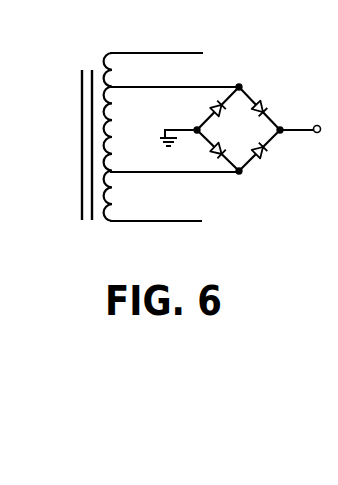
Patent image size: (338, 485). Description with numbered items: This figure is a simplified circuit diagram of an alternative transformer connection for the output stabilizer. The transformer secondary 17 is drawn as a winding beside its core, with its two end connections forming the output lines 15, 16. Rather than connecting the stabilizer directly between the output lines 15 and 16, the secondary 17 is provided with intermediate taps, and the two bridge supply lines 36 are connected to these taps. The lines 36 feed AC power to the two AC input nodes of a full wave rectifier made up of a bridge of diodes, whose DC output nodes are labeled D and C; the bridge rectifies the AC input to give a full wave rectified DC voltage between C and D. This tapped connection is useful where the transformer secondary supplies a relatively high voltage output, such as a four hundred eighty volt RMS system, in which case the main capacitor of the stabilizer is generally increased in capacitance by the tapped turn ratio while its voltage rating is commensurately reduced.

The output line 15 is at (170, 53).
The output line 16 is at (178, 221).
The secondary 17 is at (108, 221).
The bridge supply lines 36 is at (172, 87).